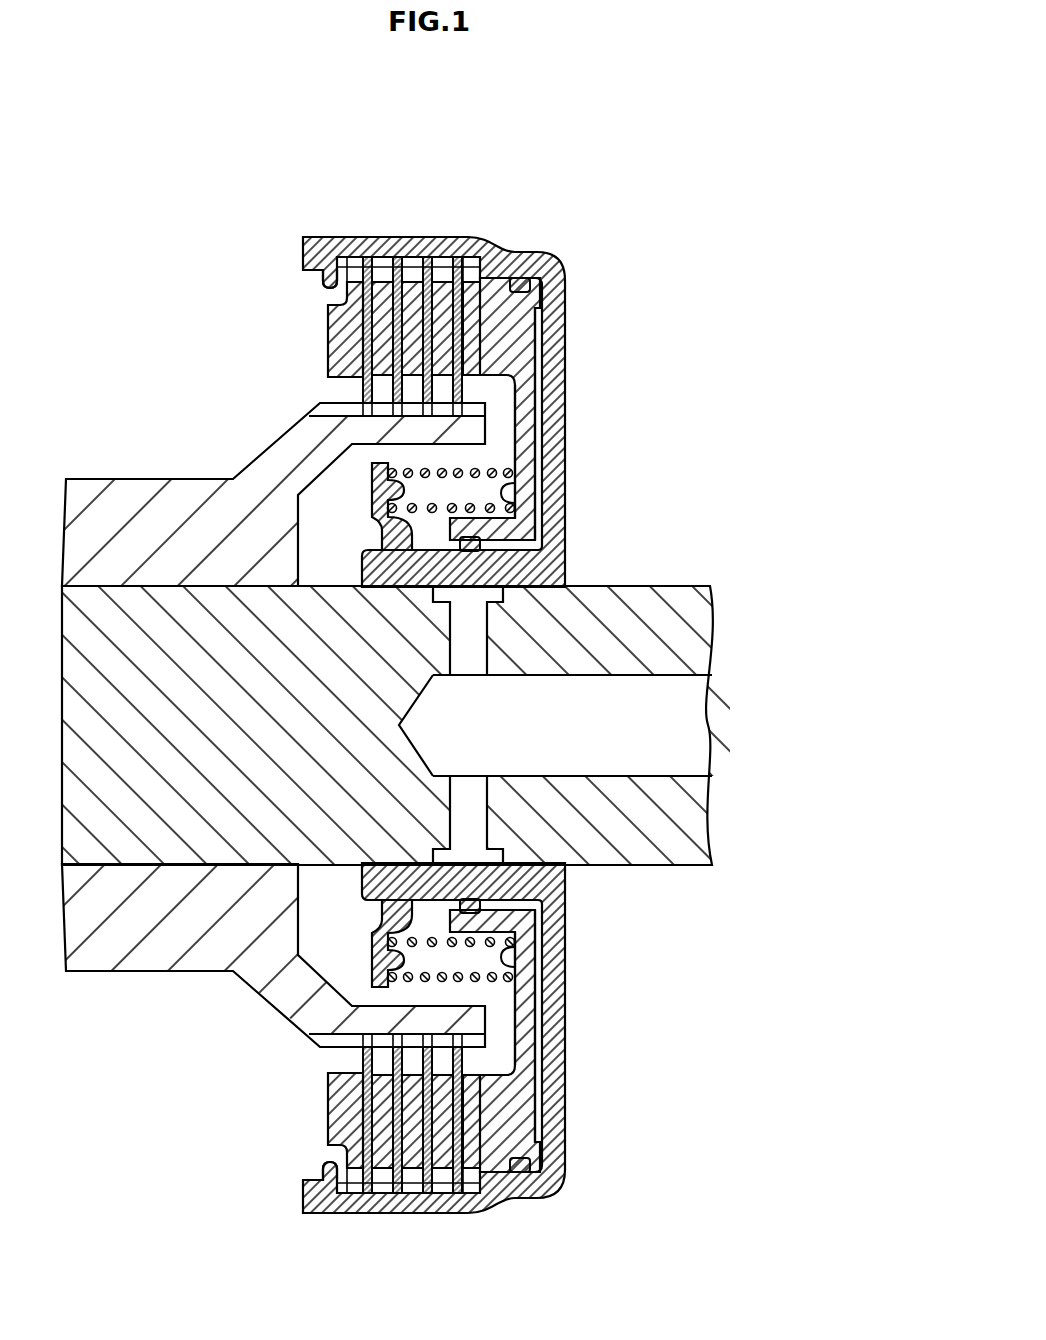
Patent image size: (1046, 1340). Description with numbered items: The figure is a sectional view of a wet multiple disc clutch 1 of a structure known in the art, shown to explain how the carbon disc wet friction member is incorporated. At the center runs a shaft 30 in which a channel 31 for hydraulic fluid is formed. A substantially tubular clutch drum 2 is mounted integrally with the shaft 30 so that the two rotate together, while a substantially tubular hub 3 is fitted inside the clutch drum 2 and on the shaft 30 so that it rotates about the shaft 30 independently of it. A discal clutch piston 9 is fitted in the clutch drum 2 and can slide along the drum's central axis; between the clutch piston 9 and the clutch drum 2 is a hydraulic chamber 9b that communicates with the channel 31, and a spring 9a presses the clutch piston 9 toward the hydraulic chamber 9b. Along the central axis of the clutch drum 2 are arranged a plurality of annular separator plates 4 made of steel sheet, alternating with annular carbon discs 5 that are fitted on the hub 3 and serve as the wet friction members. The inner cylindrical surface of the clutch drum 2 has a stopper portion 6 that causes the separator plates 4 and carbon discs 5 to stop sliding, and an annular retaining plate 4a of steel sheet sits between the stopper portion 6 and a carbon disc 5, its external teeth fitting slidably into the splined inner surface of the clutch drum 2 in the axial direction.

The wet multiple disc clutch 1 is at (600, 147).
The clutch drum 2 is at (565, 280).
The hub 3 is at (282, 458).
The separator plates 4 is at (378, 383).
The retaining plate 4a is at (328, 334).
The carbon disc 5 is at (368, 283).
The stopper portion 6 is at (325, 288).
The clutch piston 9 is at (528, 370).
The spring 9a is at (475, 473).
The hydraulic chamber 9b is at (537, 478).
The shaft 30 is at (658, 590).
The channel 31 is at (478, 625).